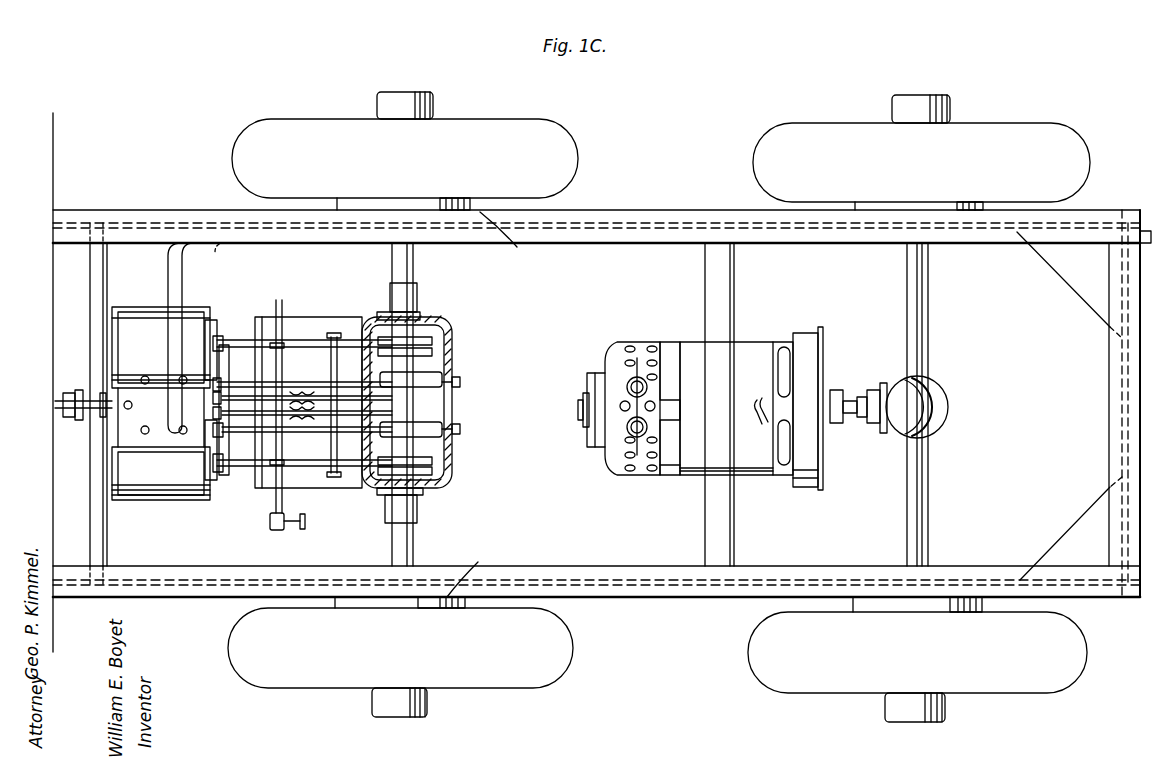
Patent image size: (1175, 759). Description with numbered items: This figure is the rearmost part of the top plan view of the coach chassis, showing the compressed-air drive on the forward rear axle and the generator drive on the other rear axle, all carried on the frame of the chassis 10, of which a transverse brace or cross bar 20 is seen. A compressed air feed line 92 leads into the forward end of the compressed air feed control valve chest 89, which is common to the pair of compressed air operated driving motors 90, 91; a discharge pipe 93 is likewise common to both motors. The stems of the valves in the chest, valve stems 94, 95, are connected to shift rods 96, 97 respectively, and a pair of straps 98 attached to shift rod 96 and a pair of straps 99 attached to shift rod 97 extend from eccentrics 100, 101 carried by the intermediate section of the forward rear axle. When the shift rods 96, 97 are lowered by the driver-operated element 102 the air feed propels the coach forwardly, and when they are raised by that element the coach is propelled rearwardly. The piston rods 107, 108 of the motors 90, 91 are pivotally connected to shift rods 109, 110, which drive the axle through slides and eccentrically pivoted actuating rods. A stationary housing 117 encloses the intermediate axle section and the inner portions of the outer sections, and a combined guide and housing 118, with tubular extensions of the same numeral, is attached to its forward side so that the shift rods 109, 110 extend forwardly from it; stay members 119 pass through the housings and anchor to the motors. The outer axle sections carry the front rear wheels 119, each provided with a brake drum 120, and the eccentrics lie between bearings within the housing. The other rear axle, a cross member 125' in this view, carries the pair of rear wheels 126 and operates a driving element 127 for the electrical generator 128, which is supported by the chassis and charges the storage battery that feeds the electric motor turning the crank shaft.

The frame 10 is at (104, 252).
The cross bar 20 is at (722, 292).
The compressed air feed control valve chest 89 is at (236, 330).
The compressed air operated driving motor 90 is at (188, 310).
The compressed air operated driving motor 91 is at (205, 425).
The compressed air feed line 92 is at (60, 385).
The discharge pipe 93 is at (167, 308).
The valve stem 94 is at (168, 434).
The valve stem 95 is at (207, 395).
The shift rod 96 is at (282, 336).
The shift rod 97 is at (234, 410).
The straps 98 is at (384, 318).
The straps 99 is at (338, 480).
The eccentric 100 is at (432, 384).
The eccentric 101 is at (418, 418).
The shifting element 102 is at (285, 501).
The piston rod 107 is at (219, 345).
The piston rod 108 is at (249, 430).
The shift rod 109 is at (261, 345).
The shift rod 110 is at (290, 463).
The stationary housing 117 is at (452, 340).
The combined guide and housing 118 is at (339, 337).
The front rear wheels 119 is at (493, 128).
The brake drum 120 is at (517, 250).
The cross member 125' is at (954, 404).
The rear wheel 126 is at (1073, 142).
The driving element 127 is at (927, 398).
The electrical generator 128 is at (760, 356).